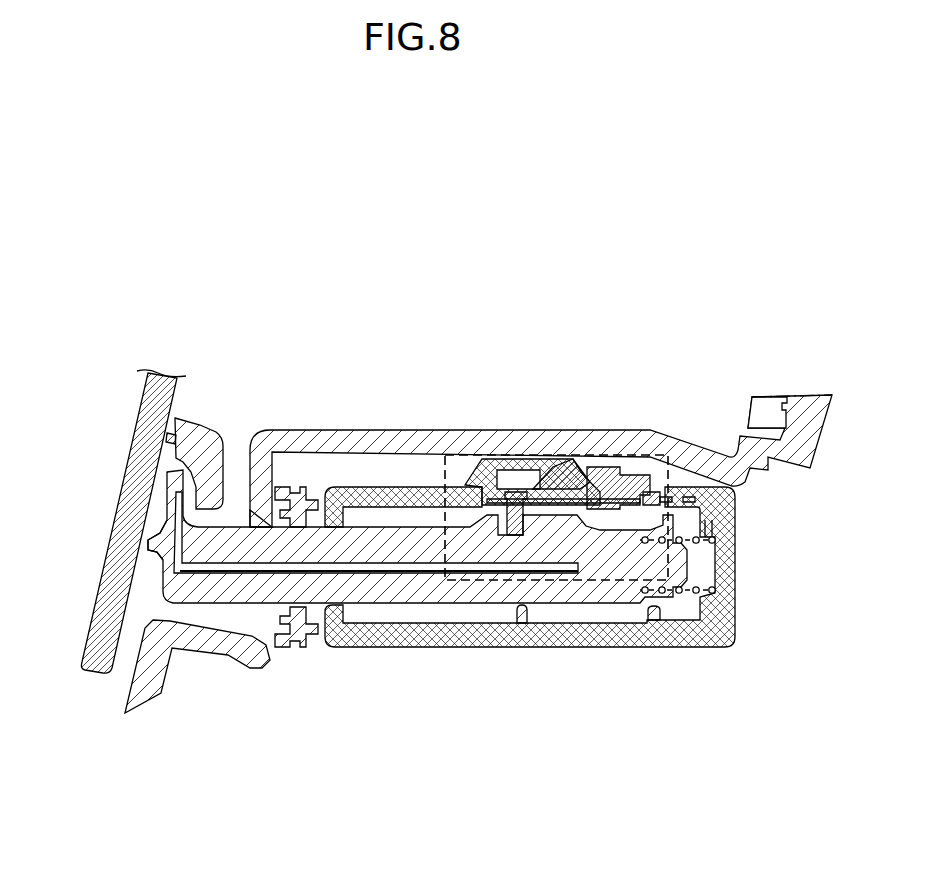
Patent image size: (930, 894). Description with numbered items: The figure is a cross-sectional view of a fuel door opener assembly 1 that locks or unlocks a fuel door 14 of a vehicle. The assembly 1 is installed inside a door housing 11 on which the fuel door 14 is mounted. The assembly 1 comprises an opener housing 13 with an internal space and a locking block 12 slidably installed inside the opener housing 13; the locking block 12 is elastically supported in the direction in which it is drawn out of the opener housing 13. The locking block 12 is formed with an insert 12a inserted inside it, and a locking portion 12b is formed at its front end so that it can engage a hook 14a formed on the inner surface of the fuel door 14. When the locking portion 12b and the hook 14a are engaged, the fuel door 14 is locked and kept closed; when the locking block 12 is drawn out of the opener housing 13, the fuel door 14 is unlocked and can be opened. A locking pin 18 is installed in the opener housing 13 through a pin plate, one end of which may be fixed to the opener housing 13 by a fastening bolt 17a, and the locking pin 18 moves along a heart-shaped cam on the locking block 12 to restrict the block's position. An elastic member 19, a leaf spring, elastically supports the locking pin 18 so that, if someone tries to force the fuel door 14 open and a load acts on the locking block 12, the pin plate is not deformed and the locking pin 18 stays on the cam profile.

The fuel door opener assembly 1 is at (634, 181).
The door housing 11 is at (385, 440).
The locking block 12 is at (349, 642).
The insert 12a is at (417, 567).
The locking portion 12b is at (155, 538).
The opener housing 13 is at (343, 512).
The fuel door 14 is at (108, 585).
The hook 14a is at (208, 472).
The fastening bolt 17a is at (604, 470).
The locking pin 18 is at (508, 540).
The elastic member 19 is at (540, 480).